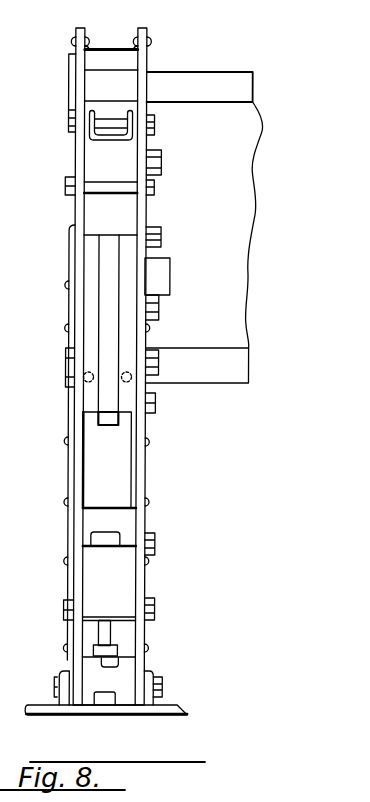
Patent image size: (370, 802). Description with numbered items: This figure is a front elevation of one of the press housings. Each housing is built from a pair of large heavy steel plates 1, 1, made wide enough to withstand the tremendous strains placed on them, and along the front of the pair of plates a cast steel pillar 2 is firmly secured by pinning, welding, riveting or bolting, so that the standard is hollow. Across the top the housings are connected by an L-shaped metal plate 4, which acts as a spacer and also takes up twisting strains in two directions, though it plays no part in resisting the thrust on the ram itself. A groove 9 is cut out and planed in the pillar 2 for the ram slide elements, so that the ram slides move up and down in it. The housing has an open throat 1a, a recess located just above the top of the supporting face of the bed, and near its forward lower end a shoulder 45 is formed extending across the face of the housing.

The steel plate 1 is at (73, 468).
The open throat 1a is at (118, 453).
The cast steel pillar 2 is at (123, 522).
The L-shaped metal plate 4 is at (197, 117).
The groove 9 is at (110, 300).
The shoulder 45 is at (105, 660).